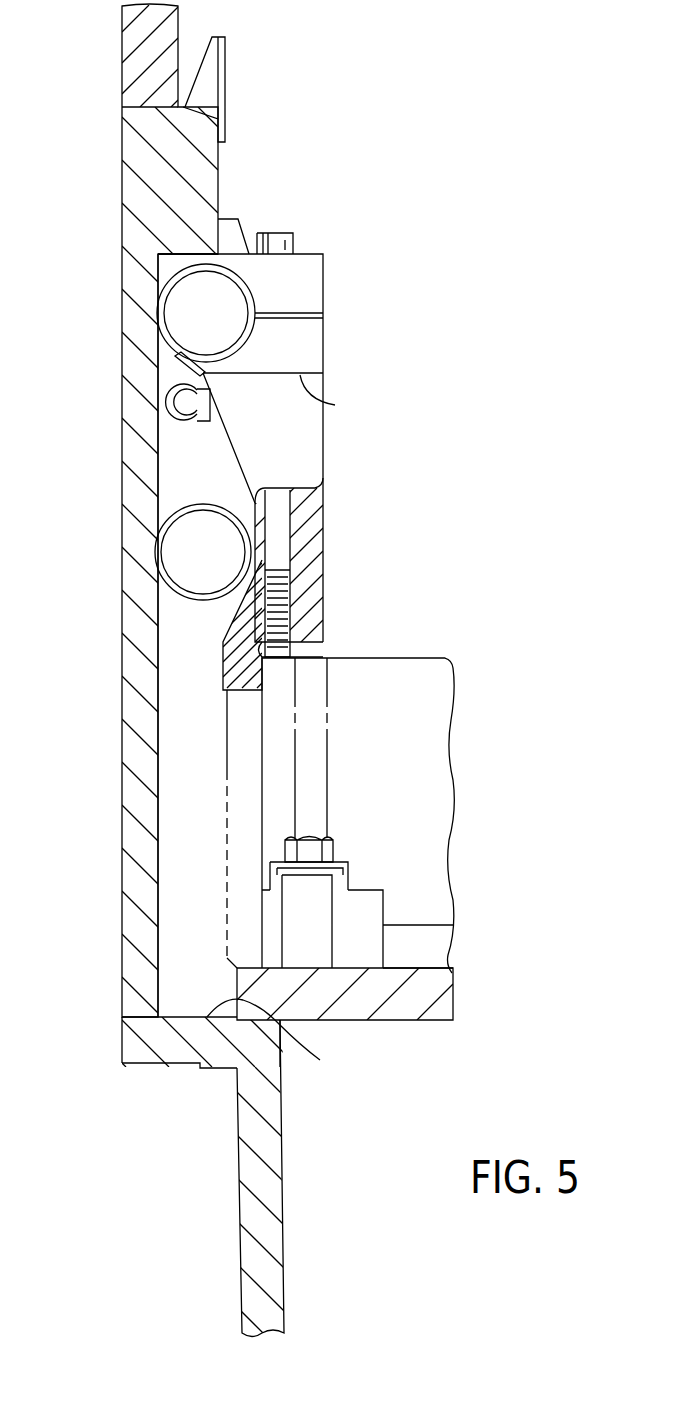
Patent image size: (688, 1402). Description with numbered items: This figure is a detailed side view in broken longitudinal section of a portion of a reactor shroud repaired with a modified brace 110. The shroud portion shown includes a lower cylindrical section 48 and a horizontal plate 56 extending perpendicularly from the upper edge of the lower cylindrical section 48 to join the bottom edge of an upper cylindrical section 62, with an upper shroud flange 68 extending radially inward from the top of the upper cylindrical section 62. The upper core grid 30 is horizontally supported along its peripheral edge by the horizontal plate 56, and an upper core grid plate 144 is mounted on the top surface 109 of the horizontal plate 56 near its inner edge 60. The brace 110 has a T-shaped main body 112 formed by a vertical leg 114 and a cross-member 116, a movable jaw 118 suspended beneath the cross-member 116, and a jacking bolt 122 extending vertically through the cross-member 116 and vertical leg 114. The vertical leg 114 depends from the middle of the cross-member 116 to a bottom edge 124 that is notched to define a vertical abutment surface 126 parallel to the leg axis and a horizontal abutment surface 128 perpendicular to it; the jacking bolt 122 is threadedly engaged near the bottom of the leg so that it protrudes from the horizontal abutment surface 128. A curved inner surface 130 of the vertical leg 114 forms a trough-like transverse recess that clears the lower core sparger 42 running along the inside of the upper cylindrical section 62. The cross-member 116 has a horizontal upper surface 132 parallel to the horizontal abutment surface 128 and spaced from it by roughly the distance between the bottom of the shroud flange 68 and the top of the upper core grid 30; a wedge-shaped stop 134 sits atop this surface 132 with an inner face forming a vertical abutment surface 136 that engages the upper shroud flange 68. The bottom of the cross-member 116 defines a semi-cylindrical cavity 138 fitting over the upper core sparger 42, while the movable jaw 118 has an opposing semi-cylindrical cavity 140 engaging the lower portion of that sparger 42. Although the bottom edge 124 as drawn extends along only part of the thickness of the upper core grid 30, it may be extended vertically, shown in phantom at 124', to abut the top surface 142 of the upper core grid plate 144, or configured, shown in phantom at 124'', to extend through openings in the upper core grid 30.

The upper core grid 30 is at (398, 786).
The core sparger 42 is at (222, 324).
The lower cylindrical section 48 is at (238, 1157).
The horizontal plate 56 is at (198, 1066).
The inner edge 60 is at (278, 1055).
The upper cylindrical section 62 is at (122, 913).
The upper shroud flange 68 is at (210, 112).
The top surface 109 is at (287, 1038).
The modified brace 110 is at (380, 333).
The T-shaped main body 112 is at (325, 252).
The vertical leg 114 is at (324, 492).
The cross-member 116 is at (324, 290).
The movable jaw 118 is at (335, 405).
The jacking bolt 122 is at (290, 578).
The bottom edge 124 is at (154, 649).
The extended bottom edge 124' is at (137, 830).
The extended bottom edge 124'' is at (438, 697).
The vertical abutment surface 126 is at (265, 678).
The horizontal abutment surface 128 is at (305, 645).
The curved inner surface 130 is at (235, 457).
The horizontal upper surface 132 is at (175, 252).
The wedge-shaped stop 134 is at (235, 216).
The vertical abutment surface 136 is at (216, 241).
The semi-cylindrical cavity 138 is at (178, 292).
The semi-cylindrical cavity 140 is at (183, 342).
The top surface 142 is at (432, 968).
The upper core grid plate 144 is at (394, 1030).